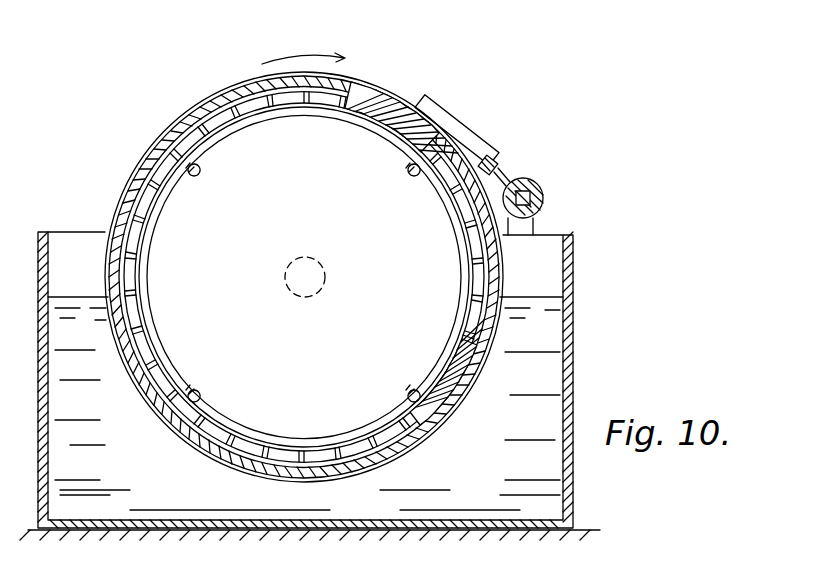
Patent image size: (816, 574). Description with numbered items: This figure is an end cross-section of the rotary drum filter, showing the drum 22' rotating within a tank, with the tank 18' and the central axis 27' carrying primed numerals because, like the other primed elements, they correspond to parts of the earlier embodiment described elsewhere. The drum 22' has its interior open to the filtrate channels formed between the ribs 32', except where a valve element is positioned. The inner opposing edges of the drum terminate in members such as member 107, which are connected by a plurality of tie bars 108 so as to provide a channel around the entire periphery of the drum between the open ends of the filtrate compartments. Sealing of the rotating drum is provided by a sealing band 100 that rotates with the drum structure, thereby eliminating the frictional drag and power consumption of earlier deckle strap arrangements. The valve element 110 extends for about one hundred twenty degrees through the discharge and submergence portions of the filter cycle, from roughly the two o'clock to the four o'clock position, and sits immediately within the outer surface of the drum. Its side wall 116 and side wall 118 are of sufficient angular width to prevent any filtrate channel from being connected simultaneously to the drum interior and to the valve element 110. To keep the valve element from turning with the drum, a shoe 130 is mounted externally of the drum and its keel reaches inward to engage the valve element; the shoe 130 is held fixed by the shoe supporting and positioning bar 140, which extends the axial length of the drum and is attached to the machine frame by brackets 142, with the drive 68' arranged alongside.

The sealing band 100 is at (366, 78).
The valve element 110 is at (388, 150).
The side wall 116 is at (368, 127).
The side wall 118 is at (440, 380).
The shoe 130 is at (457, 108).
The shoe supporting and positioning bar 140 is at (492, 158).
The brackets 142 is at (500, 175).
The drive motor 68' is at (551, 206).
The tie bars 108 is at (197, 168).
The member 107 is at (458, 230).
The ribs 32' is at (304, 277).
The drum 22' is at (299, 276).
The drum axis 27' is at (305, 260).
The tank 18' is at (321, 386).